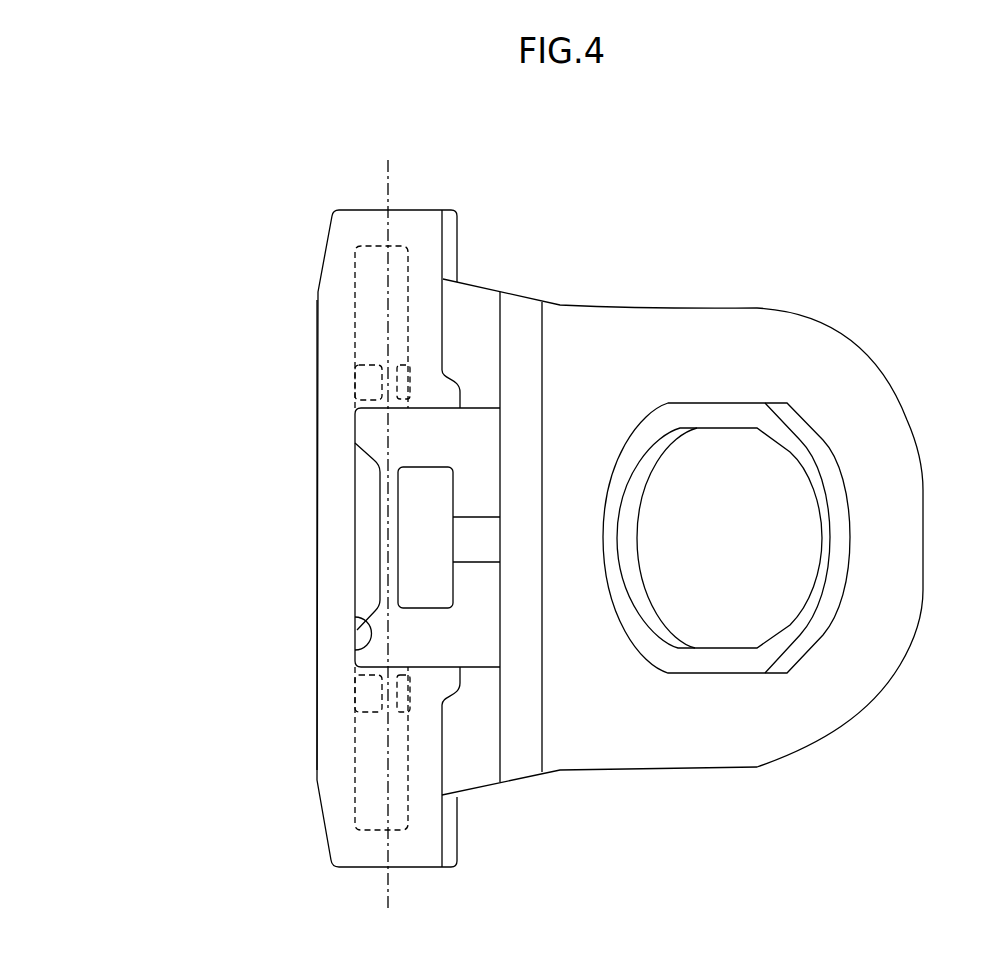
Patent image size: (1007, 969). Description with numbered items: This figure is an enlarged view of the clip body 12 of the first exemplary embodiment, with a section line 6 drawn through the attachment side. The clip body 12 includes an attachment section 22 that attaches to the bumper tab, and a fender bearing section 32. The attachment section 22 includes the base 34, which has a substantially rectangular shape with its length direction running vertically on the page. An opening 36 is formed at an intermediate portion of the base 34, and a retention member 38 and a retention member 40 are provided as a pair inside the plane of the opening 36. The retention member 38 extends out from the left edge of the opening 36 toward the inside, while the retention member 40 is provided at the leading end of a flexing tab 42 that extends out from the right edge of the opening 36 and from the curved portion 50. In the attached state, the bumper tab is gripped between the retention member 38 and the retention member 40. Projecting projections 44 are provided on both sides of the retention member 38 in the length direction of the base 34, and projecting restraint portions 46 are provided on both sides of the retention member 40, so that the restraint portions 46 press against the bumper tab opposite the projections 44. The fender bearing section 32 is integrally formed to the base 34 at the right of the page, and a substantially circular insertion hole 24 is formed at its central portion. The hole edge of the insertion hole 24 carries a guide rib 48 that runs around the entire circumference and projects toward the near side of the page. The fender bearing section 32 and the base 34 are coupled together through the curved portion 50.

The section line VI-VI 6 is at (386, 174).
The clip body 12 is at (717, 488).
The attachment section 22 is at (357, 538).
The insertion hole 24 is at (822, 525).
The fender bearing section 32 is at (658, 297).
The base 34 is at (317, 537).
The opening 36 is at (357, 614).
The retention member 38 is at (362, 484).
The retention member 40 is at (420, 467).
The flexing tab 42 is at (482, 515).
The projections 44 is at (368, 365).
The restraint portions 46 is at (401, 365).
The guide rib 48 is at (818, 428).
The curved portion 50 is at (518, 294).